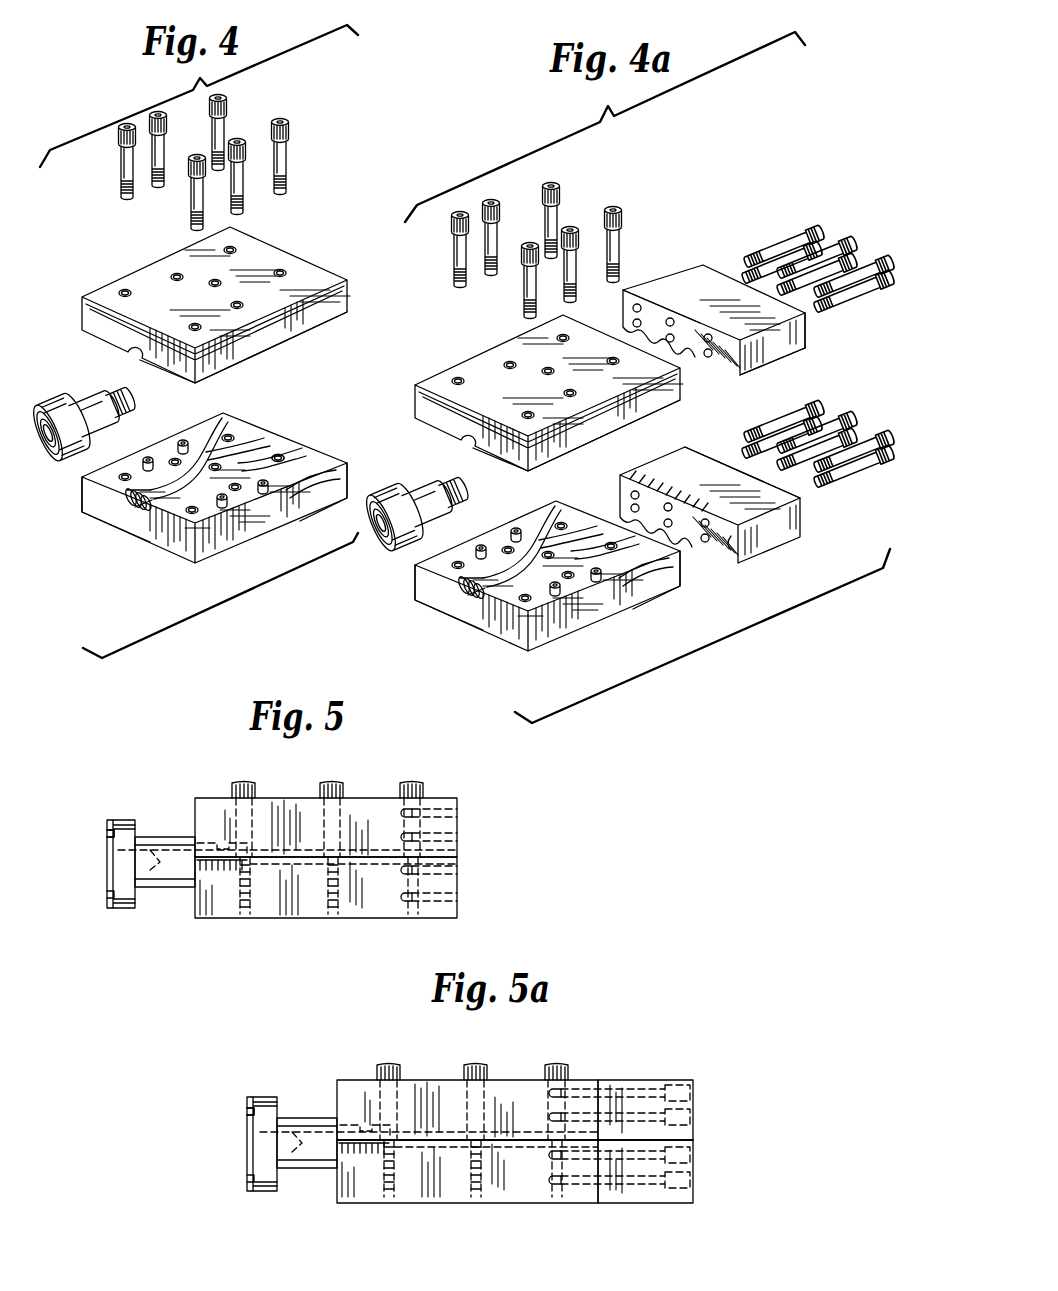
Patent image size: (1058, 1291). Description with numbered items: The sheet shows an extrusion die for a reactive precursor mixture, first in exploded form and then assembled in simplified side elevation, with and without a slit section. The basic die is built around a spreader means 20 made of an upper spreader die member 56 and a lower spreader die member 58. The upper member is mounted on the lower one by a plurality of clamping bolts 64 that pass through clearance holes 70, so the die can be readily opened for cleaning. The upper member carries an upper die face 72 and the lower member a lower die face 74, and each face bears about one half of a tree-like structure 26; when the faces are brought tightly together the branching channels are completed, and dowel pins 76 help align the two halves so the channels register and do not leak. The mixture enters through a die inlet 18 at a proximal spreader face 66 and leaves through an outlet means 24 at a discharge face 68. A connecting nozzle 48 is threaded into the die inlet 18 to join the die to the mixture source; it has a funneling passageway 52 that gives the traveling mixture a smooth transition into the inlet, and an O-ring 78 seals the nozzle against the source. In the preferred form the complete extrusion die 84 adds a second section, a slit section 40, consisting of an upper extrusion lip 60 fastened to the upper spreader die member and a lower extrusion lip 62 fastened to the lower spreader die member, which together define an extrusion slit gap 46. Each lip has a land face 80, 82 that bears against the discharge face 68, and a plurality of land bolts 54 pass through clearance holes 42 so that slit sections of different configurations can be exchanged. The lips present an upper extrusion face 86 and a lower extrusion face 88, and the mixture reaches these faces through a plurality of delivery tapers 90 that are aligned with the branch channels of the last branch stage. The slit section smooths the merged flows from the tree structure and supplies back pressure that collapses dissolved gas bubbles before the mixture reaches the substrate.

In FIG. 4, the die inlet 18 is at (128, 496).
In FIG. 4, the spreader means 20 is at (297, 206).
In FIG. 4, the outlet means 24 is at (305, 438).
In FIG. 4, the tree-like structure 26 is at (184, 491).
In FIG. 5, the tree-like structure 26 is at (277, 862).
In FIG. 5A, the tree-like structure 26 is at (422, 1147).
In FIG. 4A, the slit section 40 is at (809, 333).
In FIG. 4A, the clearance holes 42 is at (708, 334).
In FIG. 5A, the extrusion slit gap 46 is at (698, 1138).
In FIG. 4, the connecting nozzle 48 is at (49, 401).
In FIG. 4A, the connecting nozzle 48 is at (389, 563).
In FIG. 5, the connecting nozzle 48 is at (128, 914).
In FIG. 5A, the connecting nozzle 48 is at (265, 1195).
In FIG. 5, the funneling passageway 52 is at (155, 862).
In FIG. 5A, the funneling passageway 52 is at (307, 1140).
In FIG. 4A, the land bolts 54 is at (817, 224).
In FIG. 5A, the land bolts 54 is at (676, 1097).
In FIG. 4, the upper spreader die member 56 is at (278, 244).
In FIG. 4A, the upper spreader die member 56 is at (506, 330).
In FIG. 5, the upper spreader die member 56 is at (465, 793).
In FIG. 5A, the upper spreader die member 56 is at (507, 1075).
In FIG. 4, the lower spreader die member 58 is at (246, 548).
In FIG. 4A, the lower spreader die member 58 is at (604, 632).
In FIG. 5, the lower spreader die member 58 is at (361, 922).
In FIG. 5A, the lower spreader die member 58 is at (500, 1206).
In FIG. 4A, the upper extrusion lip 60 is at (720, 277).
In FIG. 5A, the upper extrusion lip 60 is at (634, 1078).
In FIG. 4A, the lower extrusion lip 62 is at (796, 543).
In FIG. 5A, the lower extrusion lip 62 is at (646, 1206).
In FIG. 4, the clamping bolts 64 is at (298, 149).
In FIG. 4A, the clamping bolts 64 is at (449, 249).
In FIG. 5, the clamping bolts 64 is at (240, 781).
In FIG. 5A, the clamping bolts 64 is at (458, 1063).
In FIG. 4, the proximal spreader face 66 is at (168, 556).
In FIG. 4A, the proximal spreader face 66 is at (495, 636).
In FIG. 4, the discharge face 68 is at (351, 478).
In FIG. 4A, the discharge face 68 is at (686, 573).
In FIG. 4, the clearance holes 70 is at (172, 276).
In FIG. 4A, the clearance holes 70 is at (509, 358).
In FIG. 4, the upper die face 72 is at (274, 353).
In FIG. 4A, the upper die face 72 is at (653, 429).
In FIG. 4, the lower die face 74 is at (281, 484).
In FIG. 4, the dowel pins 76 is at (223, 506).
In FIG. 4A, the dowel pins 76 is at (612, 575).
In FIG. 5, the O-ring 78 is at (155, 860).
In FIG. 5A, the O-ring 78 is at (303, 1138).
In FIG. 4A, the land face 80 is at (652, 312).
In FIG. 4A, the land face 82 is at (733, 541).
In FIG. 4A, the extrusion die 84 is at (739, 208).
In FIG. 4A, the upper extrusion face 86 is at (779, 367).
In FIG. 4A, the lower extrusion face 88 is at (701, 473).
In FIG. 4A, the delivery tapers 90 is at (626, 470).